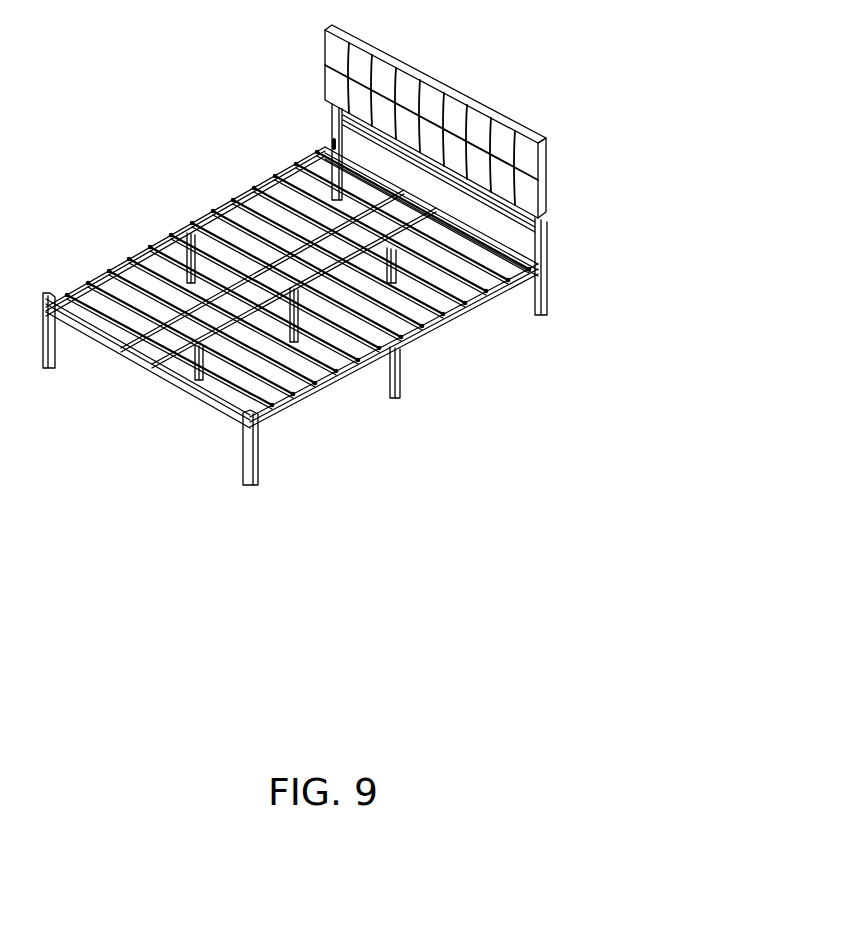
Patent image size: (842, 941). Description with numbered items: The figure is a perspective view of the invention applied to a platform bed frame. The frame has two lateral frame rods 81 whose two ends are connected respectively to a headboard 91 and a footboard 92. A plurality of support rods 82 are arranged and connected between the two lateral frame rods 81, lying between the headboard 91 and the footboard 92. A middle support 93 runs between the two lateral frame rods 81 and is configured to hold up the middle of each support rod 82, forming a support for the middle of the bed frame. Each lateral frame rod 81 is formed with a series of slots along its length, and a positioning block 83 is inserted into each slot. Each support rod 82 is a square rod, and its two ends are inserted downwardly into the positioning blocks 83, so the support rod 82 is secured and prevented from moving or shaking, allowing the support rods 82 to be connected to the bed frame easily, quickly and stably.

The lateral frame rod 81 is at (212, 213).
The support rod 82 is at (123, 297).
The positioning block 83 is at (92, 278).
The headboard 91 is at (477, 125).
The footboard 92 is at (110, 344).
The middle support 93 is at (328, 256).